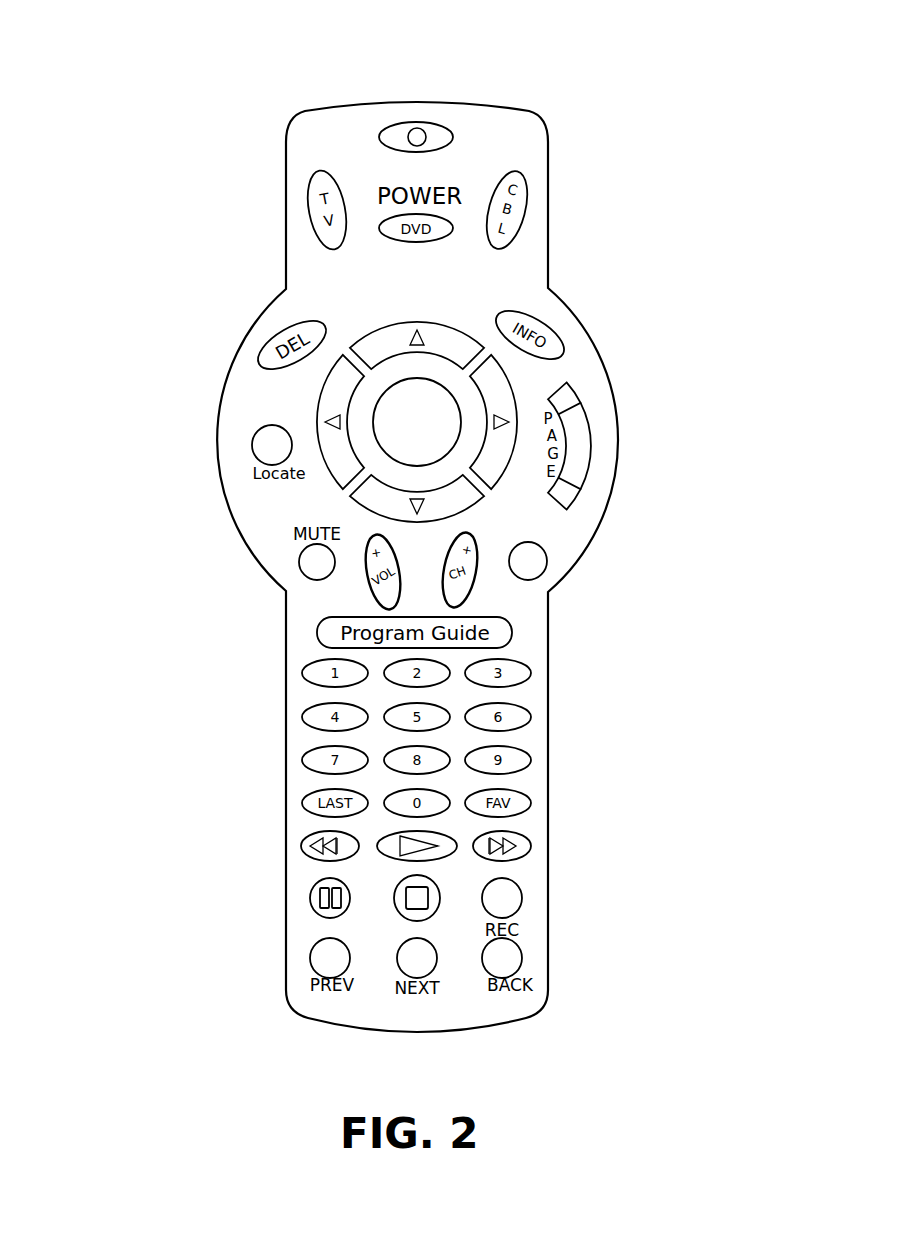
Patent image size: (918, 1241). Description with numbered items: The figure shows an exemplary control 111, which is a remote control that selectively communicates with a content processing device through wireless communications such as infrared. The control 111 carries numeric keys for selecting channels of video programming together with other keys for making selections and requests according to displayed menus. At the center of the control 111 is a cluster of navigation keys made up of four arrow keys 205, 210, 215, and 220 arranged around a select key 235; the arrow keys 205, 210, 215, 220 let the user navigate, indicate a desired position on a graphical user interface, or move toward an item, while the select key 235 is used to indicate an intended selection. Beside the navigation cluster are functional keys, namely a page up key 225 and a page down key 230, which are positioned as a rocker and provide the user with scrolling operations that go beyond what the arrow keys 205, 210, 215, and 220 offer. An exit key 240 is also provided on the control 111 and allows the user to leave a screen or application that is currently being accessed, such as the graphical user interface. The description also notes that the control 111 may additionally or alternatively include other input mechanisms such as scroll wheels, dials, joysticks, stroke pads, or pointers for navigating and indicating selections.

The control 111 is at (634, 118).
The arrow key 205 is at (367, 331).
The arrow key 210 is at (317, 423).
The arrow key 215 is at (357, 497).
The arrow key 220 is at (505, 370).
The page up key 225 is at (582, 400).
The page down key 230 is at (580, 503).
The select key 235 is at (372, 421).
The exit key 240 is at (547, 561).